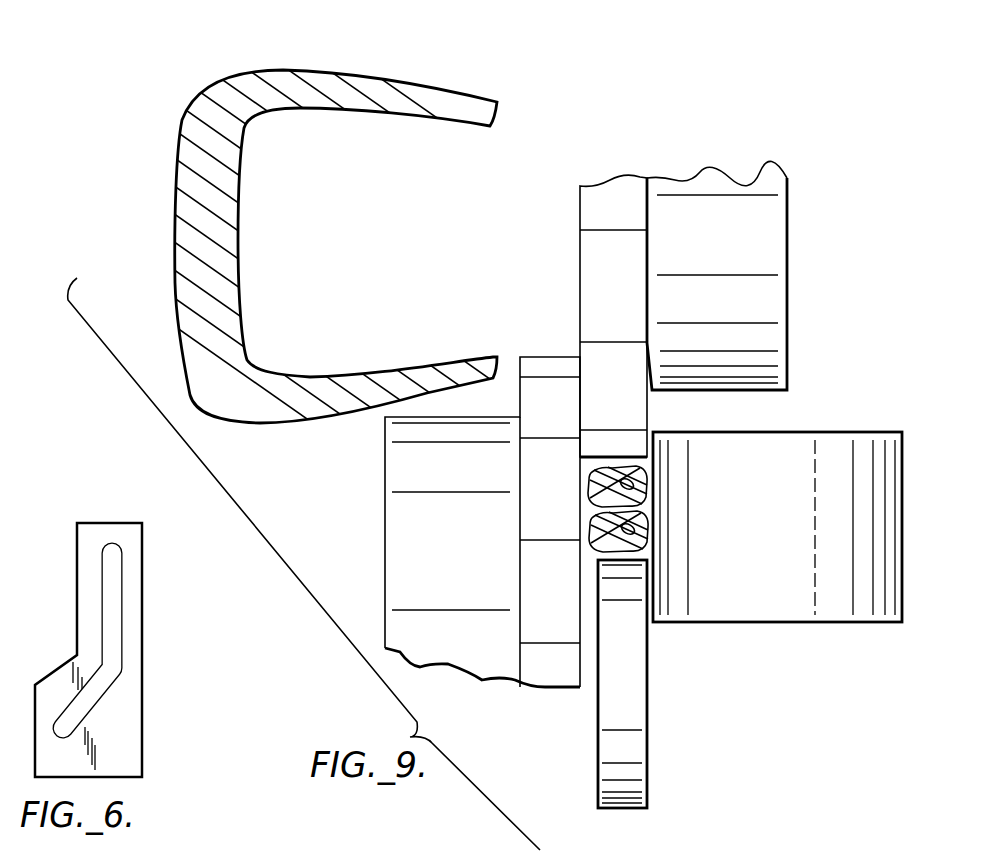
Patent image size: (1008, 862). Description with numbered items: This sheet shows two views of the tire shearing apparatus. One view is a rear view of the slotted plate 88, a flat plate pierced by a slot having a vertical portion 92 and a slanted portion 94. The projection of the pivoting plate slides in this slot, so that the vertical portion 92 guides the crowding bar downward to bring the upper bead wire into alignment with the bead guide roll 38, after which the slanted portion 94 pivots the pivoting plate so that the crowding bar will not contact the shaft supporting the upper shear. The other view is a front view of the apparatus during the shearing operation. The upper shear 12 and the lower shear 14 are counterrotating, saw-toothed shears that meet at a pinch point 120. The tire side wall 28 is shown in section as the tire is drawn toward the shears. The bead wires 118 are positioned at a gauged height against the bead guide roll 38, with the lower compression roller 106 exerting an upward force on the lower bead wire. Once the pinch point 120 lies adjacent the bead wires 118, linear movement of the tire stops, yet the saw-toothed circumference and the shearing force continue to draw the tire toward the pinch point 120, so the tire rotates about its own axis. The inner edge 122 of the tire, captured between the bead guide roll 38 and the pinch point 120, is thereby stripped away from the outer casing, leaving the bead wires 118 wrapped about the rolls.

In FIG. 9, the upper shear 12 is at (593, 267).
In FIG. 9, the shear 14 is at (533, 460).
In FIG. 9, the side wall 28 is at (330, 410).
In FIG. 9, the bead guide roll 38 is at (840, 610).
In FIG. 6, the slotted plate 88 is at (133, 587).
In FIG. 6, the vertical portion 92 is at (115, 653).
In FIG. 6, the slanted portion 94 is at (103, 693).
In FIG. 9, the lower compression roller 106 is at (610, 755).
In FIG. 9, the bead wires 118 is at (605, 525).
In FIG. 9, the pinch point 120 is at (583, 453).
In FIG. 9, the inner edge 122 is at (645, 527).